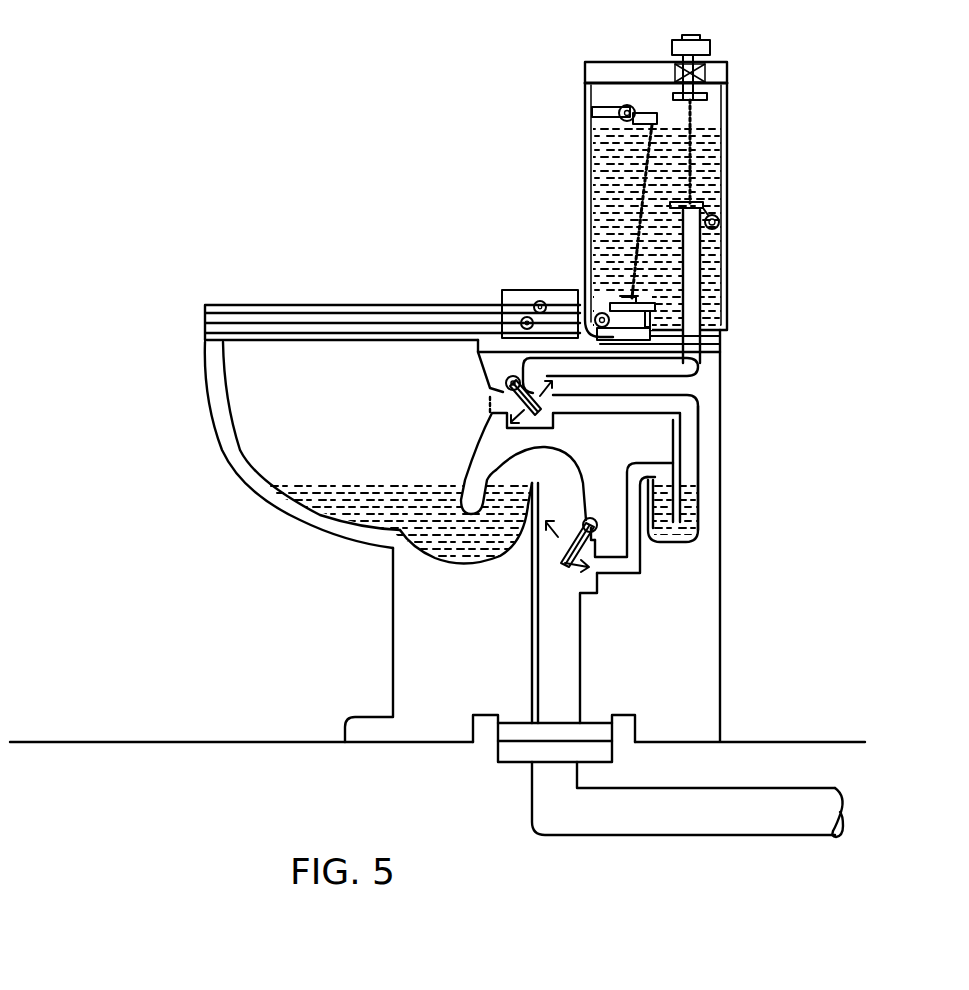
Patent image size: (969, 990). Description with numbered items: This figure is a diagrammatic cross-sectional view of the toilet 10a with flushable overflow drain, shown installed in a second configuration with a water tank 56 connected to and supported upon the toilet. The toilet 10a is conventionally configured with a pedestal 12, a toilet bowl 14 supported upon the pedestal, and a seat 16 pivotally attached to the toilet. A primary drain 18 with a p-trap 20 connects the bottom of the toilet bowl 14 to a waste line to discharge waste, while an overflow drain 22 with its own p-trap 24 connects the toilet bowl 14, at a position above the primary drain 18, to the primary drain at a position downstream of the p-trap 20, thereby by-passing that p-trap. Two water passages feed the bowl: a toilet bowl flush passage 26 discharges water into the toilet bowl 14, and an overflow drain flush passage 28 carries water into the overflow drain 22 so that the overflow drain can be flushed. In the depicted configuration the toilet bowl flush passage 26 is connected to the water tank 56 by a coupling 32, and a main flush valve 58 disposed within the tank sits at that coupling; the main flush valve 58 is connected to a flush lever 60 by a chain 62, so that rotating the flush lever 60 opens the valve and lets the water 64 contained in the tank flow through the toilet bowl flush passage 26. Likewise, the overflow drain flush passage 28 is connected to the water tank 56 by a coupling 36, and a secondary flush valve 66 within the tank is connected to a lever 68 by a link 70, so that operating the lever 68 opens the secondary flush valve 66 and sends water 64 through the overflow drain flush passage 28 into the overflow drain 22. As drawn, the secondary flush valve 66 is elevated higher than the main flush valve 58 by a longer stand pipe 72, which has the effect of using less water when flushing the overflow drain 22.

The toilet with flushable overflow drain 10a is at (166, 177).
The pedestal 12 is at (400, 622).
The toilet bowl 14 is at (208, 413).
The seat 16 is at (205, 318).
The primary drain 18 is at (545, 638).
The p-trap 20 is at (473, 577).
The overflow drain 22 is at (690, 440).
The p-trap 24 is at (710, 529).
The toilet bowl flush passage 26 is at (498, 342).
The overflow drain flush passage 28 is at (690, 362).
The coupling 32 is at (583, 330).
The coupling 36 is at (727, 316).
The water tank 56 is at (582, 178).
The main flush valve 58 is at (598, 304).
The flush lever 60 is at (590, 100).
The chain 62 is at (632, 213).
The water 64 is at (583, 150).
The secondary flush valve 66 is at (717, 205).
The lever 68 is at (710, 63).
The link 70 is at (693, 137).
The stand pipe 72 is at (695, 275).